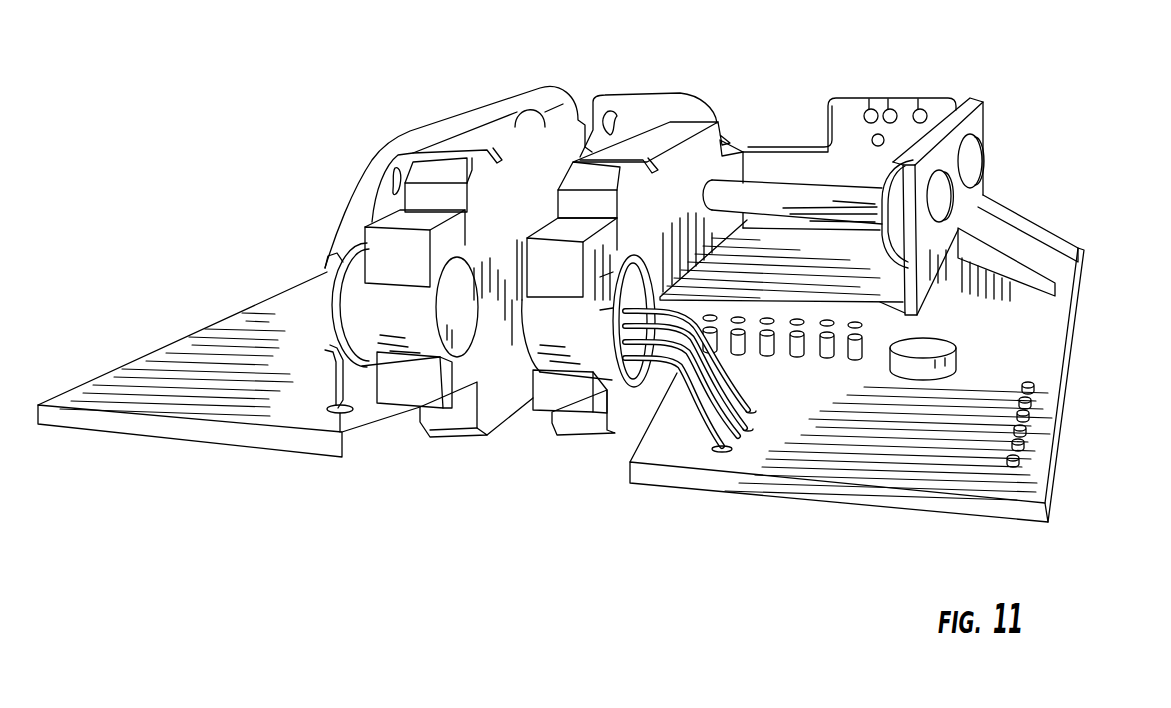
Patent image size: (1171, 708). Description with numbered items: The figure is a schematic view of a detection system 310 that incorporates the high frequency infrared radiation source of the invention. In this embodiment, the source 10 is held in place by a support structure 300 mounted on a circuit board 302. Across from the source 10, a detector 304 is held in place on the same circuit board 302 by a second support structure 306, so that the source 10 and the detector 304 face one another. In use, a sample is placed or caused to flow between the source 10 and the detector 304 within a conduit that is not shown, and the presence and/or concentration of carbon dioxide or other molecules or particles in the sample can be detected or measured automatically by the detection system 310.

The source 10 is at (577, 343).
The support structure 300 is at (670, 130).
The circuit board 302 is at (1043, 365).
The detector 304 is at (377, 327).
The support structure 306 is at (437, 173).
The detection system 310 is at (805, 567).